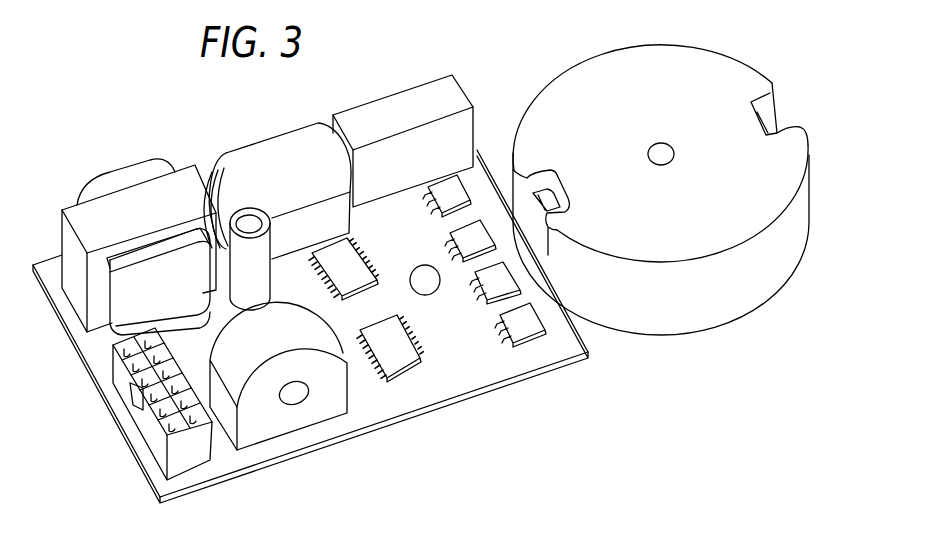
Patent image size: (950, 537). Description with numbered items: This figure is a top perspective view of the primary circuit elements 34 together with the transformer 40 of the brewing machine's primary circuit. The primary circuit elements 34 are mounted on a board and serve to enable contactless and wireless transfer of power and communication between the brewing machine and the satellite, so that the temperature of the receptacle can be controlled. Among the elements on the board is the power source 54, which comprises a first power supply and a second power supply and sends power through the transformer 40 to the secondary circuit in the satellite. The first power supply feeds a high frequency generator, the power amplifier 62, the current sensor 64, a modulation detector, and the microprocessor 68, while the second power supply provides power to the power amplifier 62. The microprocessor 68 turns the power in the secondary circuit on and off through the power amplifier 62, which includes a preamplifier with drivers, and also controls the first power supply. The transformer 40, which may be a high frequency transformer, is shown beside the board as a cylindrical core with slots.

The primary circuit elements 34 is at (378, 398).
The transformer 40 is at (687, 70).
The power source 54 is at (130, 212).
The power amplifier 62 is at (520, 323).
The current sensor 64 is at (270, 417).
The microprocessor 68 is at (432, 284).